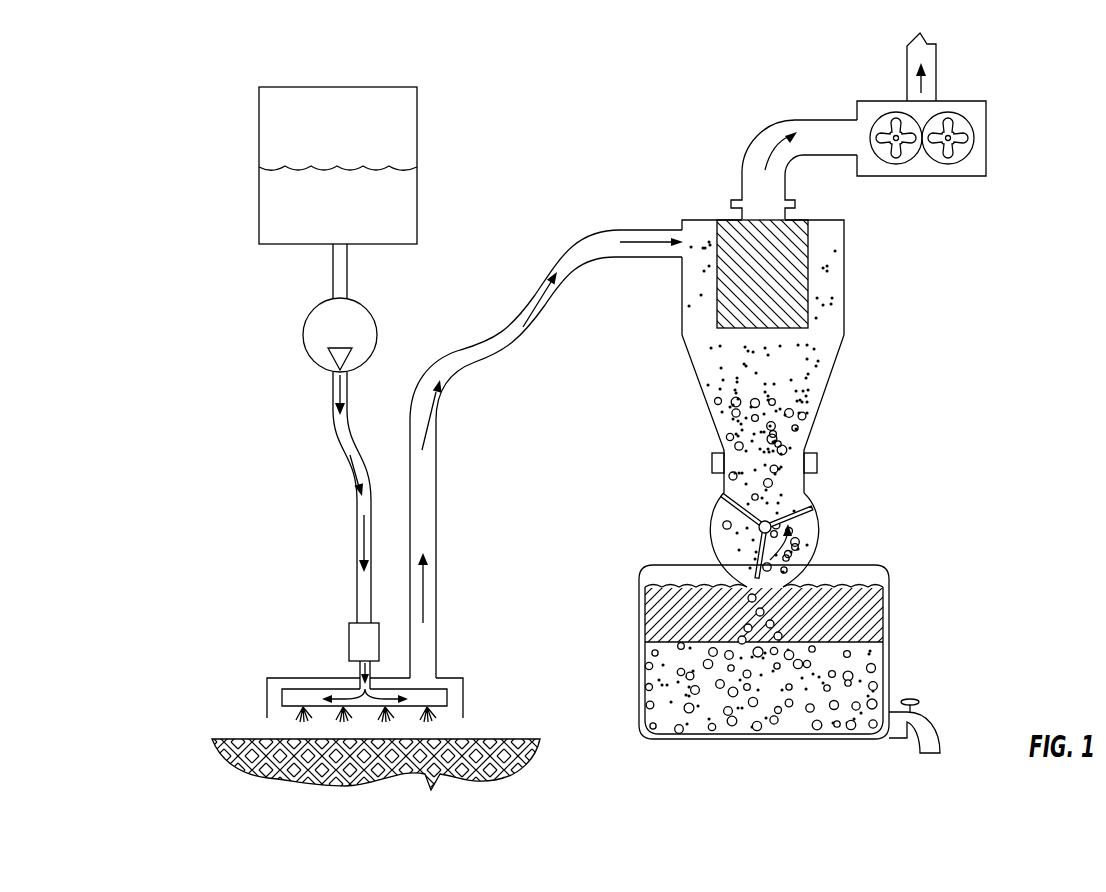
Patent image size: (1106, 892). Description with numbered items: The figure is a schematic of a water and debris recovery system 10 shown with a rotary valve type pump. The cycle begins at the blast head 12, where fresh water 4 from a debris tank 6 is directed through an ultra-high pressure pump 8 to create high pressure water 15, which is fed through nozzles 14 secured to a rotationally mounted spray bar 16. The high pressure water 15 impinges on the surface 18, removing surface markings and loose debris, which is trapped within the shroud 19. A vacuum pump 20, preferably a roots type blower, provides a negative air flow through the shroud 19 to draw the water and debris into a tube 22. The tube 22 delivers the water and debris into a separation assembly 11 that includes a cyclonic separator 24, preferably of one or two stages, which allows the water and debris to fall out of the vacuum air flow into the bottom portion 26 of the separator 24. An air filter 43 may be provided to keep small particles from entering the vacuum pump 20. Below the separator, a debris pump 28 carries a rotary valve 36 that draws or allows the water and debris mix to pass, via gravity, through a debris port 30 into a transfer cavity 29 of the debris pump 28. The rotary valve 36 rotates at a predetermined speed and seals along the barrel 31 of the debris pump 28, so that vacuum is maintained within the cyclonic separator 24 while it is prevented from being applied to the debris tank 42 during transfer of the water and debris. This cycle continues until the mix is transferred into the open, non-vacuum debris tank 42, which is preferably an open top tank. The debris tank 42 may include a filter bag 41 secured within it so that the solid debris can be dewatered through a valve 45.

The fresh water 4 is at (407, 218).
The debris tank 6 is at (259, 205).
The ultra-high pressure pump 8 is at (303, 334).
The water and debris recovery system 10 is at (593, 141).
The separation assembly 11 is at (857, 315).
The blast head 12 is at (268, 678).
The nozzles 14 is at (301, 703).
The high pressure water 15 is at (363, 600).
The spray bar 16 is at (319, 697).
The surface 18 is at (473, 739).
The shroud 19 is at (460, 678).
The vacuum pump 20 is at (986, 101).
The tube 22 is at (434, 530).
The cyclonic separator 24 is at (845, 248).
The bottom portion 26 is at (806, 392).
The debris pump 28 is at (807, 552).
The transfer cavity 29 is at (730, 527).
The debris port 30 is at (777, 467).
The barrel 31 is at (718, 505).
The rotary valve 36 is at (800, 517).
The filter bag 41 is at (889, 590).
The debris tank 42 is at (889, 609).
The air filter 43 is at (732, 230).
The valve 45 is at (918, 720).